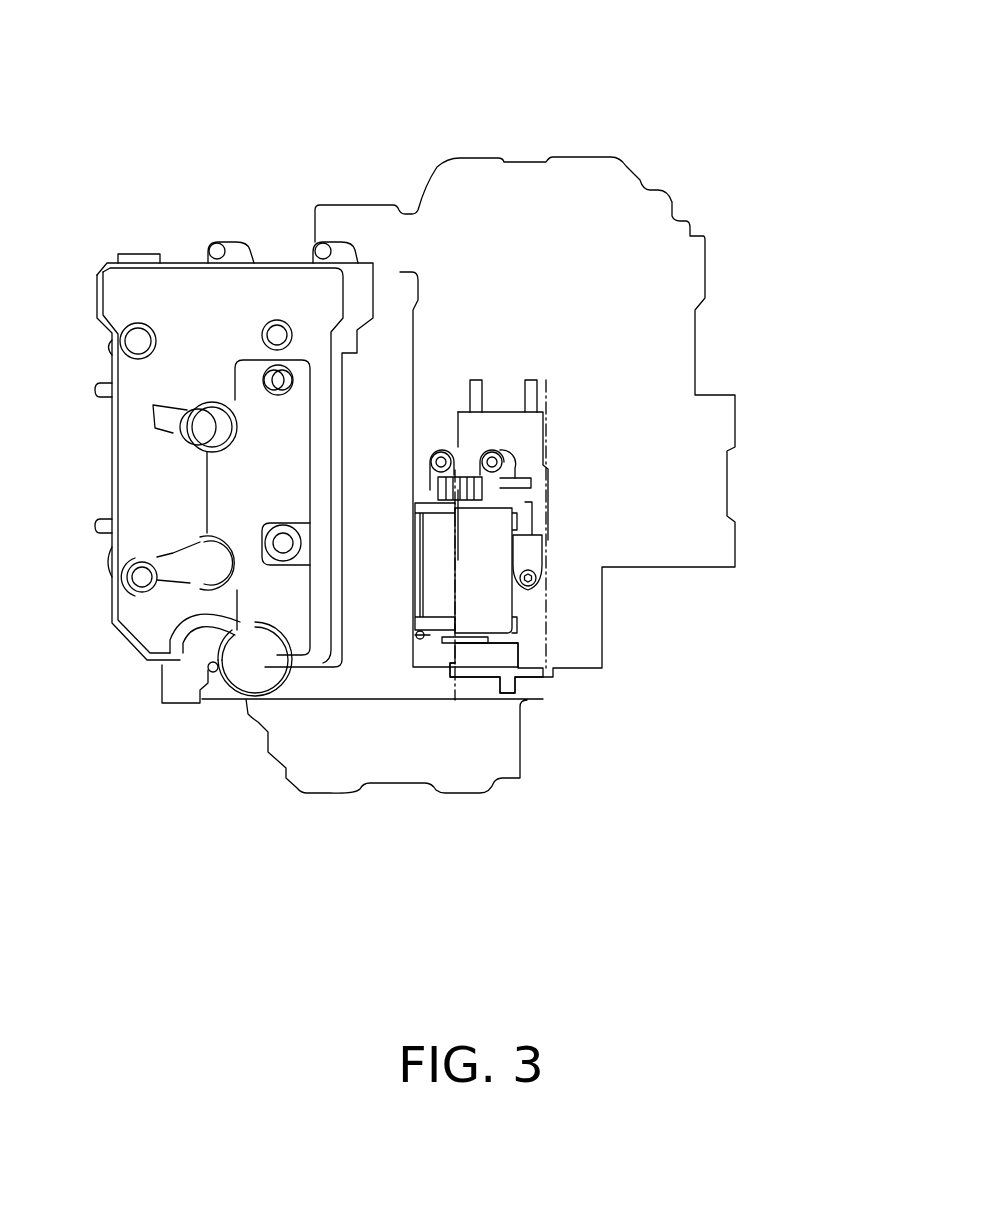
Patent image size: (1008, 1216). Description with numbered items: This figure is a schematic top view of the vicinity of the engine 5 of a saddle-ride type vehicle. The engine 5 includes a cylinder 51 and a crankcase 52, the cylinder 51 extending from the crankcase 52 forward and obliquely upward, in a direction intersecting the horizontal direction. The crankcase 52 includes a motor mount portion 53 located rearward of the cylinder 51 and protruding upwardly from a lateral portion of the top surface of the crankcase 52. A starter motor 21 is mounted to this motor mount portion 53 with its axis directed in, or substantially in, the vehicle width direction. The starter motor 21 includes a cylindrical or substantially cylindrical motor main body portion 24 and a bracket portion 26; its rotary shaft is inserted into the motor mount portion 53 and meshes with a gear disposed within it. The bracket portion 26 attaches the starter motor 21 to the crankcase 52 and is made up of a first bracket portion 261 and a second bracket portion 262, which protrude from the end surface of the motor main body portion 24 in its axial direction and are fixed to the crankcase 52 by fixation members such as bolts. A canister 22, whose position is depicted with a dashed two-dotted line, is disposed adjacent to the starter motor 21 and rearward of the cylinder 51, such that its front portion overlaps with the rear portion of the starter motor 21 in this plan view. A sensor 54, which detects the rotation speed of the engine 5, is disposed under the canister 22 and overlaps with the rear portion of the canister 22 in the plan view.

The engine 5 is at (375, 160).
The cylinder 51 is at (279, 288).
The crankcase 52 is at (568, 183).
The motor mount portion 53 is at (520, 655).
The sensor 54 is at (543, 550).
The starter motor 21 is at (520, 600).
The canister 22 is at (483, 683).
The motor main body portion 24 is at (442, 600).
The bracket portion 26 is at (525, 459).
The first bracket portion 261 is at (492, 455).
The second bracket portion 262 is at (441, 455).